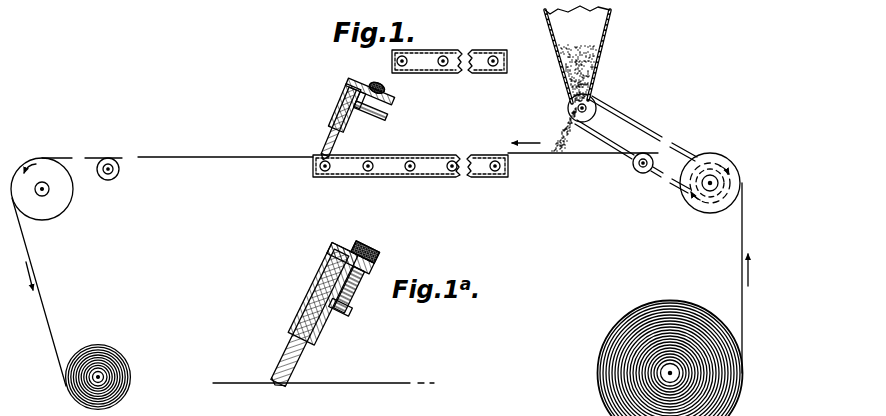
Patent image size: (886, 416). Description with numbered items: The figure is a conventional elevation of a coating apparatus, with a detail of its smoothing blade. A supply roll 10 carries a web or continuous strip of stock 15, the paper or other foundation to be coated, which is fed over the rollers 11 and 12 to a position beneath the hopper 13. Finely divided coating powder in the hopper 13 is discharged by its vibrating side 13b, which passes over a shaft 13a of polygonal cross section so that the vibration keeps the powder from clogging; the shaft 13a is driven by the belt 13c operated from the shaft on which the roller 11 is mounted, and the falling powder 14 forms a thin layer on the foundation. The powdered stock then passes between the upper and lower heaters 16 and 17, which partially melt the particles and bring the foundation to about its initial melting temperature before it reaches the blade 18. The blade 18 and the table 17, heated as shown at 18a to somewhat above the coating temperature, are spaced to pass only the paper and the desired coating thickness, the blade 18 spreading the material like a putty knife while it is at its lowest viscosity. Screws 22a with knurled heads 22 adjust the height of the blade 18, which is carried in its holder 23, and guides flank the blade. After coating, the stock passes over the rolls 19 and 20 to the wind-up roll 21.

In FIG. 1, the supply roll 10 is at (630, 401).
In FIG. 1, the roller 11 is at (704, 200).
In FIG. 1, the roller 12 is at (639, 173).
In FIG. 1, the hopper 13 is at (549, 46).
In FIG. 1, the shaft 13a is at (592, 100).
In FIG. 1, the vibrating side 13b is at (566, 80).
In FIG. 1, the belt 13c is at (636, 144).
In FIG. 1, the deposited layer of material 14 is at (572, 142).
In FIG. 1, the web or continuous strip of stock 15 is at (192, 156).
In FIG. 1A, the web or continuous strip of stock 15 is at (372, 383).
In FIG. 1, the upper heater 16 is at (452, 50).
In FIG. 1, the lower heater 17 is at (413, 167).
In FIG. 1, the blade 18 is at (348, 130).
In FIG. 1A, the blade 18 is at (305, 346).
In FIG. 1, the heating of blade and table 18a is at (327, 144).
In FIG. 1A, the heating of blade and table 18a is at (275, 366).
In FIG. 1, the roll 19 is at (115, 177).
In FIG. 1, the roll 20 is at (61, 208).
In FIG. 1, the wind-up roll 21 is at (114, 357).
In FIG. 1, the clamp screw head 22 is at (368, 89).
In FIG. 1A, the clamp screw head 22 is at (361, 246).
In FIG. 1, the screw 22a is at (387, 118).
In FIG. 1A, the screw 22a is at (345, 310).
In FIG. 1, the blade holder 23 is at (343, 108).
In FIG. 1A, the blade holder 23 is at (306, 303).